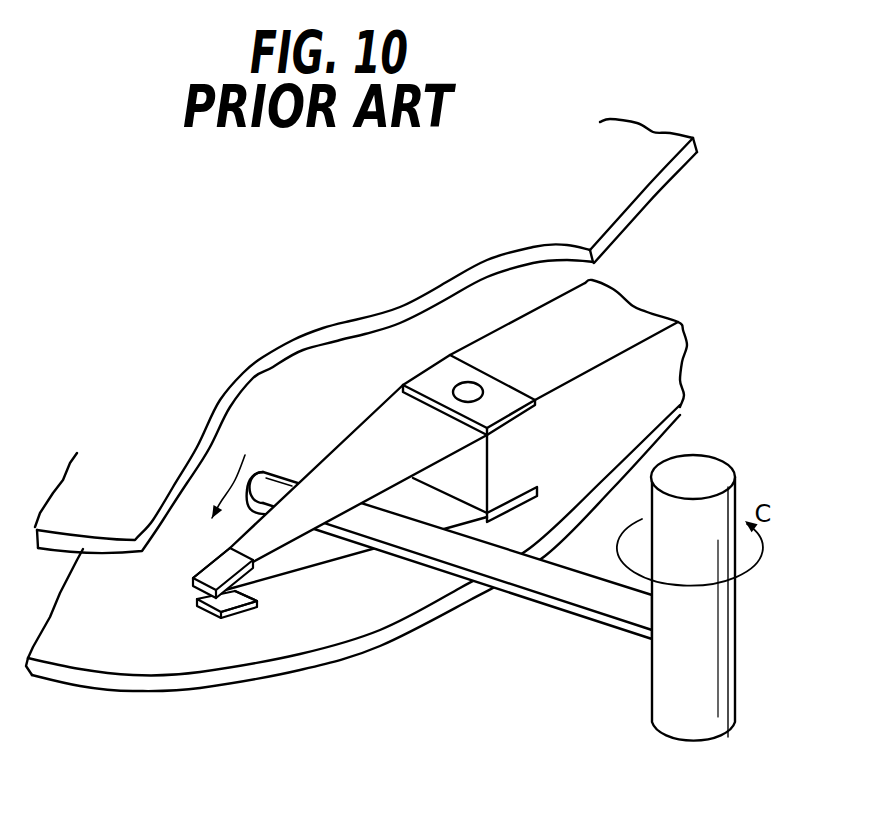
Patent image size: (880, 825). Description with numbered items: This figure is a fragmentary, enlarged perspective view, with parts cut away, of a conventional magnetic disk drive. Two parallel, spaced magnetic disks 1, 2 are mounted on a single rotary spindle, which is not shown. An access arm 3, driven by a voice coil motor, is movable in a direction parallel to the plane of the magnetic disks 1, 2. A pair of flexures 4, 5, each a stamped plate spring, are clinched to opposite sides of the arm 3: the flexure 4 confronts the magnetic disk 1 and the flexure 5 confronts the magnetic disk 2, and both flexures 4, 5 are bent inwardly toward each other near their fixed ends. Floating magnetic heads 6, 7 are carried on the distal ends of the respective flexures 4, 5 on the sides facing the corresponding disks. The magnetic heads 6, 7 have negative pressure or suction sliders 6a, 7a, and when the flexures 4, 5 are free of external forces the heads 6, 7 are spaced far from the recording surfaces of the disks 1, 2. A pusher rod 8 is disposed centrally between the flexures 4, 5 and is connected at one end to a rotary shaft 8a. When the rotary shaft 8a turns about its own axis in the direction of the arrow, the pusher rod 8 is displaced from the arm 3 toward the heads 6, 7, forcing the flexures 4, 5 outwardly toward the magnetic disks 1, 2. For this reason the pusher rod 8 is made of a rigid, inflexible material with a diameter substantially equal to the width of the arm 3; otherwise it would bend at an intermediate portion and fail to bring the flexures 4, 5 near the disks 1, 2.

The magnetic disk 1 is at (660, 193).
The magnetic disk 2 is at (237, 673).
The access arm 3 is at (673, 365).
The flexure 4 is at (390, 423).
The flexure 5 is at (333, 557).
The floating magnetic head 6 is at (189, 583).
The negative pressure slider 6a is at (200, 563).
The floating magnetic head 7 is at (200, 613).
The negative pressure slider 7a is at (240, 607).
The pusher rod 8 is at (541, 594).
The rotary shaft 8a is at (723, 633).